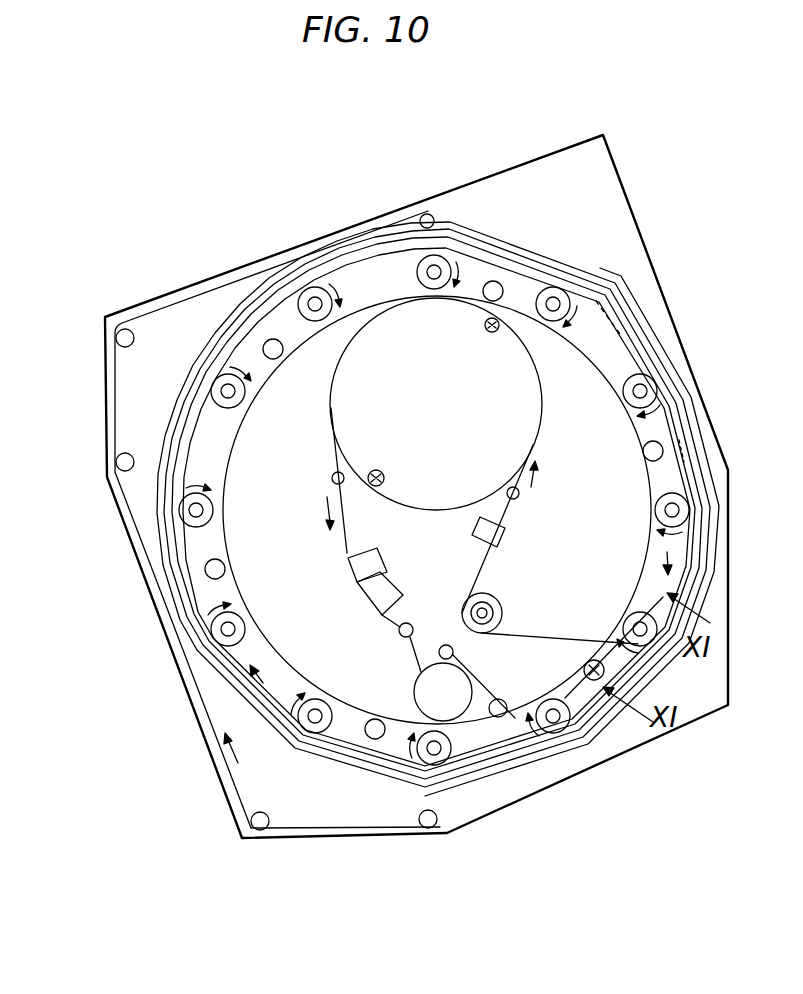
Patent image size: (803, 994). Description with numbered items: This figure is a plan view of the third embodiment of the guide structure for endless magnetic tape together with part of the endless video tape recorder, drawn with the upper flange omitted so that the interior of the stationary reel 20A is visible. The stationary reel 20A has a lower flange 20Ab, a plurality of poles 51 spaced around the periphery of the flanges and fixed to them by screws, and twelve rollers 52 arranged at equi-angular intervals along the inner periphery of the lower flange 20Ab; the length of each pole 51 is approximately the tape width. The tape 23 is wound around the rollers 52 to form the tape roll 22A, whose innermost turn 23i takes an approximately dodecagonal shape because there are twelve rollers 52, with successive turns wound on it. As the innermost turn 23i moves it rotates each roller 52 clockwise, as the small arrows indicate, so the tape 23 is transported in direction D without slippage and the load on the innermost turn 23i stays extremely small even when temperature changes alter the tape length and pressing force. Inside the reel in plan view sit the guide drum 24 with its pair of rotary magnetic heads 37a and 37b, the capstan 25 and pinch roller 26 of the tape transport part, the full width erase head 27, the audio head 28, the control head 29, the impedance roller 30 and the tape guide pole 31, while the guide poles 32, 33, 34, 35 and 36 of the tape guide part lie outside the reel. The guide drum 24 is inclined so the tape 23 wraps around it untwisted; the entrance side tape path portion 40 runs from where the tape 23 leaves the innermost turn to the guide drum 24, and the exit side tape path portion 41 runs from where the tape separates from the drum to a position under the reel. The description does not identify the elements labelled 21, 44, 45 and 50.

The base frame 21 is at (633, 210).
The stationary reel 20A is at (625, 297).
The lower flange 20Ab is at (686, 393).
The tape roll 22A is at (703, 428).
The tape 23 is at (537, 636).
The innermost turn 23i is at (683, 556).
The guide drum 24 is at (515, 410).
The capstan 25 is at (453, 652).
The pinch roller 26 is at (425, 684).
The full width erase head 27 is at (472, 535).
The audio head 28 is at (352, 560).
The control head 29 is at (380, 598).
The impedance roller 30 is at (492, 602).
The tape guide pole 31 is at (502, 700).
The guide pole 32 is at (428, 830).
The guide pole 33 is at (262, 830).
The guide pole 34 is at (121, 462).
The guide pole 35 is at (125, 338).
The guide pole 36 is at (428, 214).
The rotary magnetic head 37a is at (487, 325).
The rotary magnetic head 37b is at (383, 478).
The entrance side tape path portion 40 is at (485, 563).
The exit side tape path portion 41 is at (400, 632).
The guide pin 44 is at (519, 495).
The guide pin 45 is at (333, 478).
The drive direction 50 is at (240, 663).
The pole 51 is at (222, 567).
The roller 52 is at (242, 398).